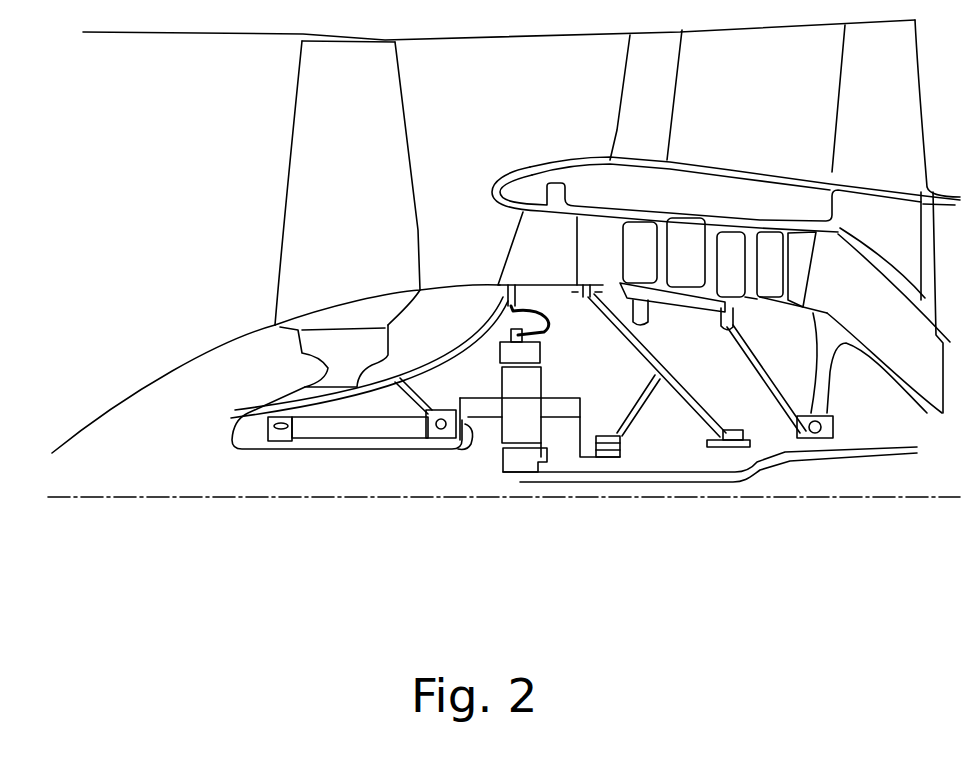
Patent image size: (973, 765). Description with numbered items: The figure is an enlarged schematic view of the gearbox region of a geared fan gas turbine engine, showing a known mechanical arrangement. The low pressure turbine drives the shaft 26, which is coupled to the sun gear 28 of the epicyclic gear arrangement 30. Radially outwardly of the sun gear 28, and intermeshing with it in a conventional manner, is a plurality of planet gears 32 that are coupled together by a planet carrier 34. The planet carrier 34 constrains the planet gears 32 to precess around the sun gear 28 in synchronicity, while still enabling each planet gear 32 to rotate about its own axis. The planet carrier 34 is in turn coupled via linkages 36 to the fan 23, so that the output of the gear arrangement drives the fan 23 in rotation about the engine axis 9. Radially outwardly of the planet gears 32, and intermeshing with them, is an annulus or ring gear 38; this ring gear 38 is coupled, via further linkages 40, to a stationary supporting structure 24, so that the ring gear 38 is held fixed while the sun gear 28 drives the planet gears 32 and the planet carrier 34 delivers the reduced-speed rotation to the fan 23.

The engine axis 9 is at (263, 497).
The fan 23 is at (306, 184).
The stationary supporting structure 24 is at (531, 243).
The shaft 26 is at (692, 477).
The sun gear 28 is at (523, 463).
The epicyclic gear arrangement 30 is at (467, 470).
The planet gears 32 is at (502, 440).
The planet carrier 34 is at (568, 447).
The linkages 36 is at (472, 425).
The ring gear 38 is at (500, 353).
The linkages 40 is at (537, 330).